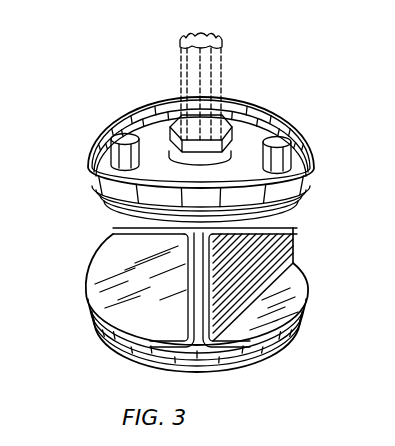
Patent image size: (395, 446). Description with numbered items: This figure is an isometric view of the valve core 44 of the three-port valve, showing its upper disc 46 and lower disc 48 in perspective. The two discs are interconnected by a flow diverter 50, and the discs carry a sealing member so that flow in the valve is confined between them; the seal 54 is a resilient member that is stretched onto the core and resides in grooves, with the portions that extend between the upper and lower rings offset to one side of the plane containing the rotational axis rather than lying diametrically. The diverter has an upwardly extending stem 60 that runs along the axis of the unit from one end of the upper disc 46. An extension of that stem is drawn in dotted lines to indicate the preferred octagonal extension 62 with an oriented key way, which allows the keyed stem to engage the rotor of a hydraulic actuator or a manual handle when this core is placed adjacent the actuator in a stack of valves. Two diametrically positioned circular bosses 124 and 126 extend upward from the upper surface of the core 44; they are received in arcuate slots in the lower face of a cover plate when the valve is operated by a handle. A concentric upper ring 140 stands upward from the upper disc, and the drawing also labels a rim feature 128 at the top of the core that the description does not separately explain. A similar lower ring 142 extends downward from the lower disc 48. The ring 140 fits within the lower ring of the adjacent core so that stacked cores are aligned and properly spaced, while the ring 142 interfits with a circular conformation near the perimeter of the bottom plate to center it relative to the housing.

The valve core 44 is at (108, 222).
The upper disc 46 is at (306, 162).
The lower disc 48 is at (292, 331).
The flow diverter 50 is at (274, 238).
The seal 54 is at (198, 295).
The stem 60 is at (231, 147).
The octagonal extension 62 is at (228, 66).
The boss 124 is at (281, 140).
The boss 126 is at (117, 138).
The rim 128 is at (244, 100).
The upper ring 140 is at (157, 98).
The lower ring 142 is at (227, 372).